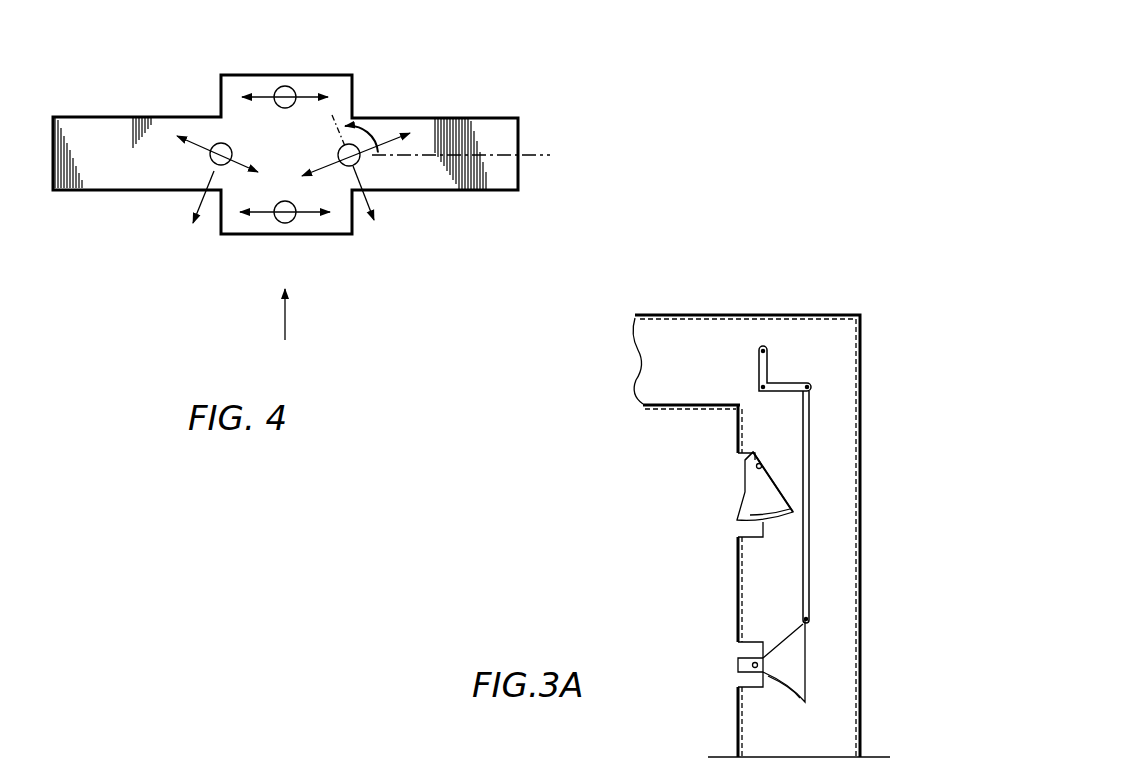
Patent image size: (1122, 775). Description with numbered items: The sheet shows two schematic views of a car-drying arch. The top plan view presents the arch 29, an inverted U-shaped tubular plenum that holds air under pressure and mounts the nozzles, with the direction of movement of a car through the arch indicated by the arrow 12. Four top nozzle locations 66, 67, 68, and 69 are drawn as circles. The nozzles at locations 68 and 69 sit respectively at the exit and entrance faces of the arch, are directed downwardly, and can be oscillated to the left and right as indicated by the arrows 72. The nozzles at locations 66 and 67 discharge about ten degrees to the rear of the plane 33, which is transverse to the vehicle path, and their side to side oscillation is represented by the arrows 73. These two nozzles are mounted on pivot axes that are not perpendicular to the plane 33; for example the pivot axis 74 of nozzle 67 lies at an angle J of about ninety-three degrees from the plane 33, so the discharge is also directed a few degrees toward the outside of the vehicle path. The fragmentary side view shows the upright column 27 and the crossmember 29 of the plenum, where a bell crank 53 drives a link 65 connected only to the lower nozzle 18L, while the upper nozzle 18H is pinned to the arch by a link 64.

In FIG. 4, the arch 29 is at (463, 132).
In FIG. 3A, the arch 29 is at (727, 313).
In FIG. 4, the top nozzle location 68 is at (288, 87).
In FIG. 4, the top nozzle location 69 is at (290, 221).
In FIG. 4, the top nozzle location 66 is at (210, 157).
In FIG. 4, the top nozzle location 67 is at (359, 163).
In FIG. 4, the arrows 72 is at (263, 96).
In FIG. 4, the arrows 73 is at (205, 143).
In FIG. 4, the pivot axis 74 is at (340, 137).
In FIG. 4, the angle J is at (364, 122).
In FIG. 4, the plane 33 is at (535, 155).
In FIG. 4, the arrow 12 is at (285, 325).
In FIG. 3A, the upright column 27 is at (735, 723).
In FIG. 3A, the bell crank 53 is at (782, 386).
In FIG. 3A, the link 65 is at (812, 570).
In FIG. 3A, the link 64 is at (750, 457).
In FIG. 3A, the upper nozzle 18H is at (750, 507).
In FIG. 3A, the lower nozzle 18L is at (790, 655).